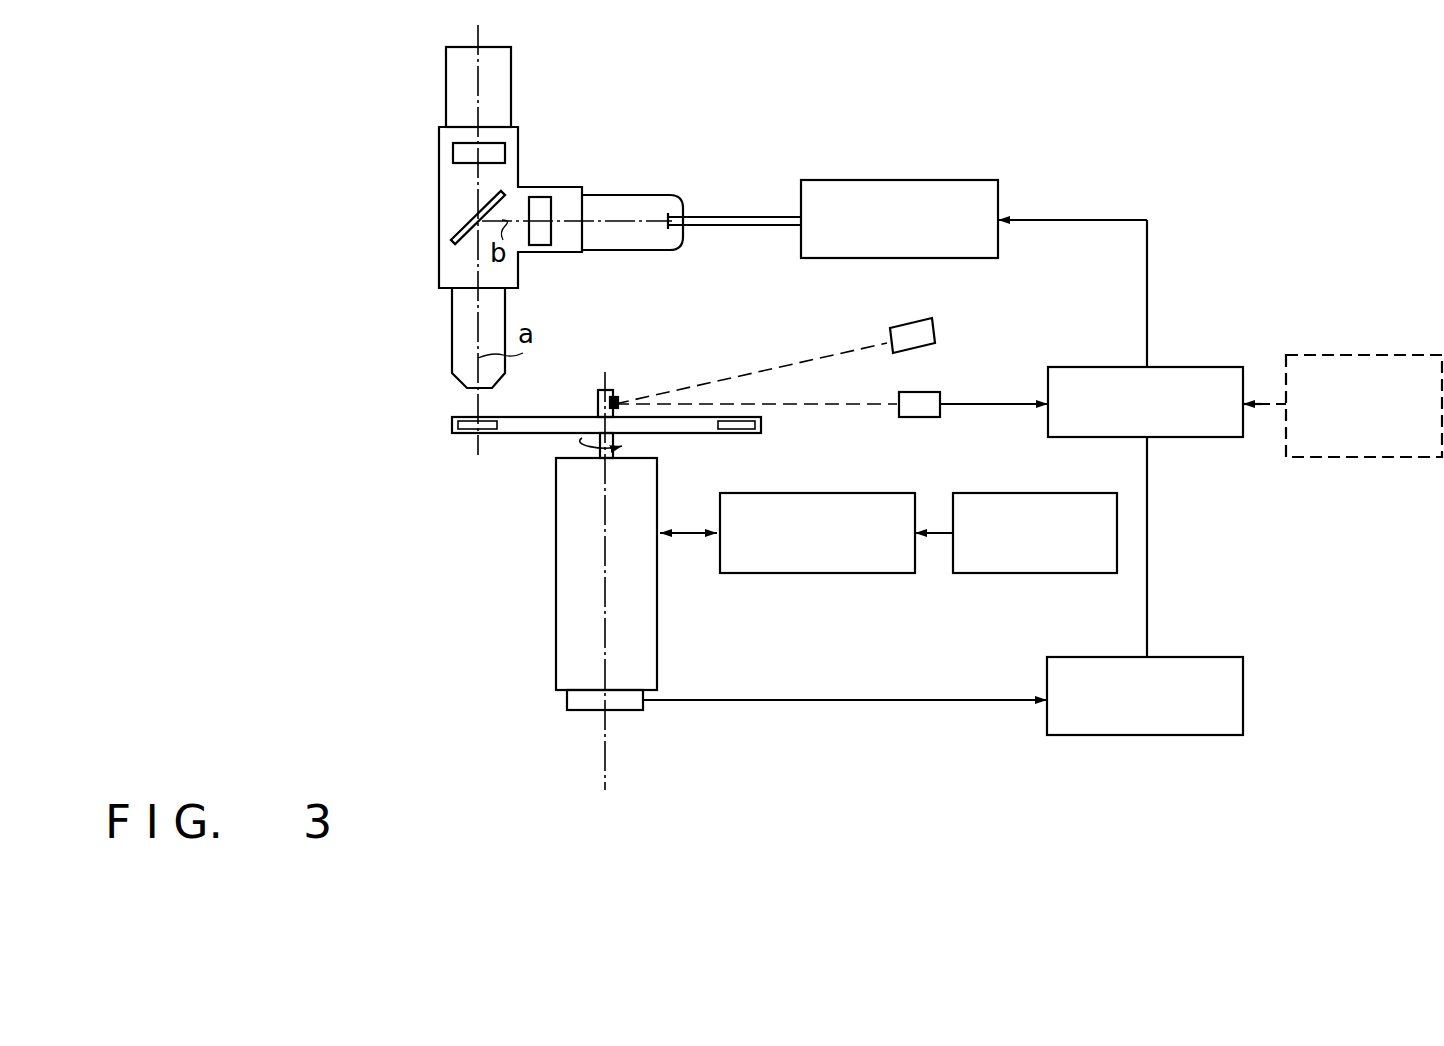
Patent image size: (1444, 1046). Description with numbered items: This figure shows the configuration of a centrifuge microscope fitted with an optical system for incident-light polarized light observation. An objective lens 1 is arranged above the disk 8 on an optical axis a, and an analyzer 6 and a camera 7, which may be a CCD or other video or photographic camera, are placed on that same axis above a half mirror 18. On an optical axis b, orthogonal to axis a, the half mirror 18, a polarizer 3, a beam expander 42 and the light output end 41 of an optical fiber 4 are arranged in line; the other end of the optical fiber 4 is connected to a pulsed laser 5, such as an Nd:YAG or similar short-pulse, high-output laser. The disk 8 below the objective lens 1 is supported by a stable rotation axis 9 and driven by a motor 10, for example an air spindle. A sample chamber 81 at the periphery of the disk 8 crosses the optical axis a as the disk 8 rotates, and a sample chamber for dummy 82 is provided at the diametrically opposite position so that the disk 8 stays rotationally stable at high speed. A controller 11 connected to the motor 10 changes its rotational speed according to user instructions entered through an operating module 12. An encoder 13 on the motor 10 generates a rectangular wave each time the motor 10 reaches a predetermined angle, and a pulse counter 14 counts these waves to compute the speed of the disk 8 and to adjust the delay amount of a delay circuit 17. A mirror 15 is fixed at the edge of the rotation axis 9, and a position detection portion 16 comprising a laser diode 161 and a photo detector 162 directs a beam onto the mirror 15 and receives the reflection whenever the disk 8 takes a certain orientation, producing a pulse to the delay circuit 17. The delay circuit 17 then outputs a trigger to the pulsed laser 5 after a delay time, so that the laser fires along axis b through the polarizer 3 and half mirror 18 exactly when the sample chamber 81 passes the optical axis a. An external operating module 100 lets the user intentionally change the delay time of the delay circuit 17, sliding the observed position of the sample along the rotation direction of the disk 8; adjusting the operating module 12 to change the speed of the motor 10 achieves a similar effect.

The objective lens 1 is at (452, 333).
The polarizer 3 is at (540, 197).
The optical fiber 4 is at (753, 217).
The pulsed laser 5 is at (931, 180).
The analyzer 6 is at (453, 150).
The camera 7 is at (446, 83).
The disk 8 is at (543, 417).
The rotation axis 9 is at (625, 445).
The motor 10 is at (645, 645).
The controller 11 is at (854, 573).
The operating module 12 is at (1040, 573).
The encoder 13 is at (567, 697).
The pulse counter 14 is at (1047, 735).
The mirror 15 is at (607, 390).
The position detection portion 16 is at (970, 364).
The delay circuit 17 is at (1177, 367).
The half mirror 18 is at (463, 218).
The light output end 41 is at (668, 238).
The beam expander 42 is at (657, 195).
The sample chamber 81 is at (452, 424).
The sample chamber for dummy 82 is at (758, 418).
The external operating module 100 is at (1340, 355).
The laser diode 161 is at (936, 332).
The photo detector 162 is at (945, 393).